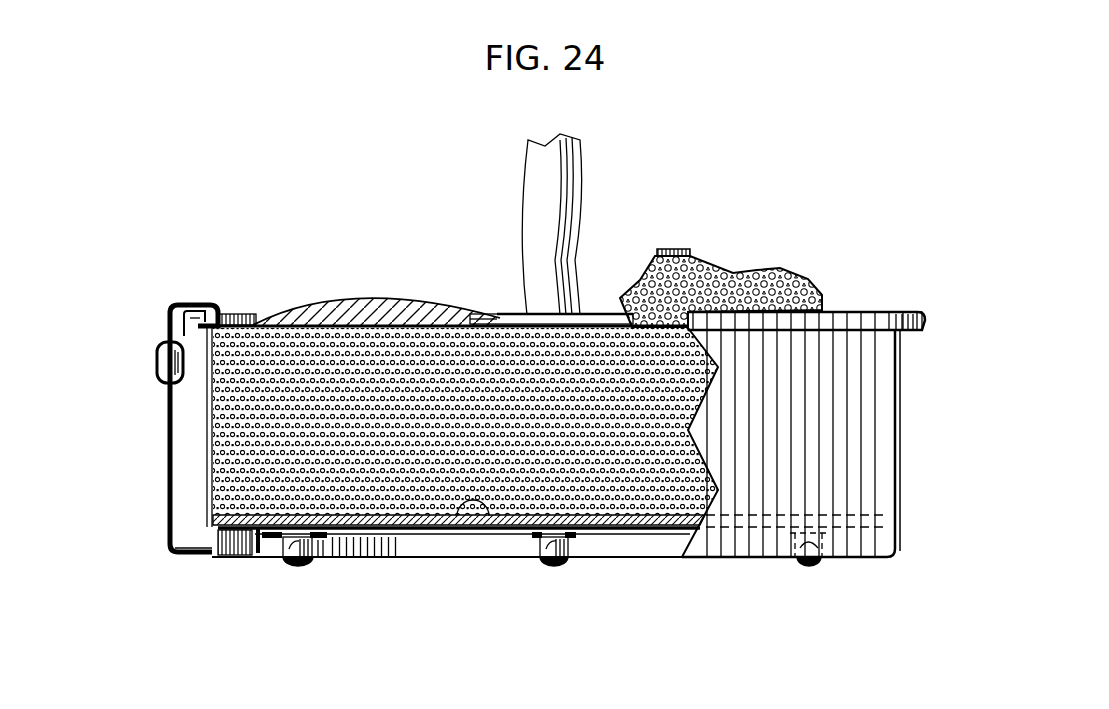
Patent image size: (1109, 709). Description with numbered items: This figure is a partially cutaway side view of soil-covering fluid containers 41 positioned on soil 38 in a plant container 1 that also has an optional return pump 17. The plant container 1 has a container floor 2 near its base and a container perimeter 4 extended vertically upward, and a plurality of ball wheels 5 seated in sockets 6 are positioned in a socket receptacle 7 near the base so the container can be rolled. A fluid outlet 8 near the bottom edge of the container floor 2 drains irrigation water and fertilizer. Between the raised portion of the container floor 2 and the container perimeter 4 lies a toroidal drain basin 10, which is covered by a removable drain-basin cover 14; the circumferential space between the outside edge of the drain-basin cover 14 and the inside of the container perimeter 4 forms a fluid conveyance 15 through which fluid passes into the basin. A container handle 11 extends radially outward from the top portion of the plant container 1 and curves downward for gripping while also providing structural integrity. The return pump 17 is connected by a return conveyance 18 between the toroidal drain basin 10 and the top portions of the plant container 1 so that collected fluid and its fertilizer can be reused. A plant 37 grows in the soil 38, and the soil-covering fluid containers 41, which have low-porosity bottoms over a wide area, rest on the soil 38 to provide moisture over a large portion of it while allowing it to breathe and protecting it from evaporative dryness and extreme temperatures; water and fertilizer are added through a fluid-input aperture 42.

The plant container 1 is at (898, 606).
The container floor 2 is at (458, 516).
The container perimeter 4 is at (207, 402).
The ball wheels 5 is at (298, 564).
The sockets 6 is at (313, 558).
The socket receptacle 7 is at (420, 540).
The fluid outlet 8 is at (212, 556).
The toroidal drain basin 10 is at (233, 558).
The container handle 11 is at (923, 328).
The drain-basin cover 14 is at (360, 512).
The fluid conveyance 15 is at (213, 510).
The return pump 17 is at (163, 353).
The return conveyance 18 is at (195, 306).
The plant 37 is at (543, 160).
The soil 38 is at (463, 368).
The soil-covering fluid containers 41 is at (805, 207).
The fluid-input aperture 42 is at (678, 249).